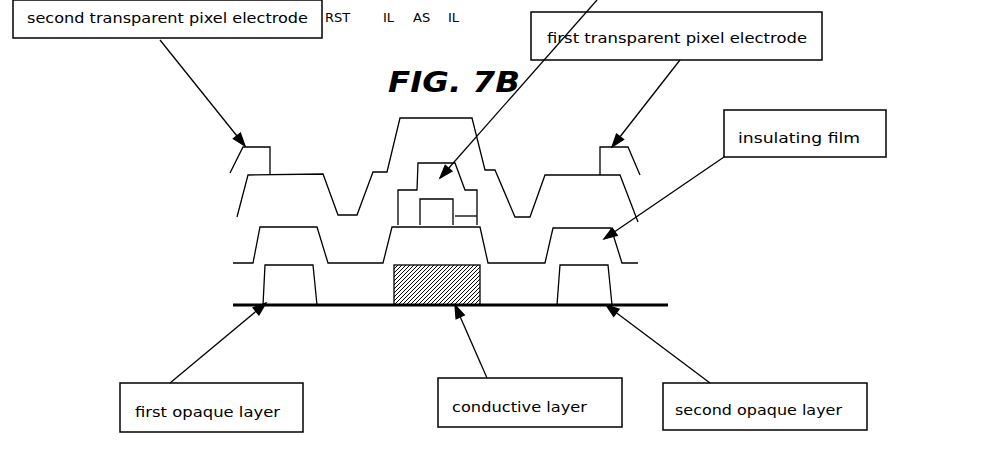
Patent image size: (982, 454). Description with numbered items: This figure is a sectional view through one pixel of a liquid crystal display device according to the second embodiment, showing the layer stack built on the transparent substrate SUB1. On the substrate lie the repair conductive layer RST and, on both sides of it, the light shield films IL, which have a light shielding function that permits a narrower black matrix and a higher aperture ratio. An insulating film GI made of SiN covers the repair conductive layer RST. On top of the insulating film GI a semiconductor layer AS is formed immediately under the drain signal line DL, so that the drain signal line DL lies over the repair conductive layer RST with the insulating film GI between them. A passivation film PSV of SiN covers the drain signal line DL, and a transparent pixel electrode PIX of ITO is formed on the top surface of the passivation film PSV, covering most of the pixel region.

The transparent substrate SUB1 is at (643, 327).
The light shield film IL is at (290, 295).
The repair conductive layer RST is at (424, 305).
The insulating film GI is at (641, 285).
The drain signal line DL is at (453, 176).
The semiconductor layer AS is at (477, 216).
The passivation film PSV is at (627, 230).
The transparent pixel electrode PIX is at (623, 162).